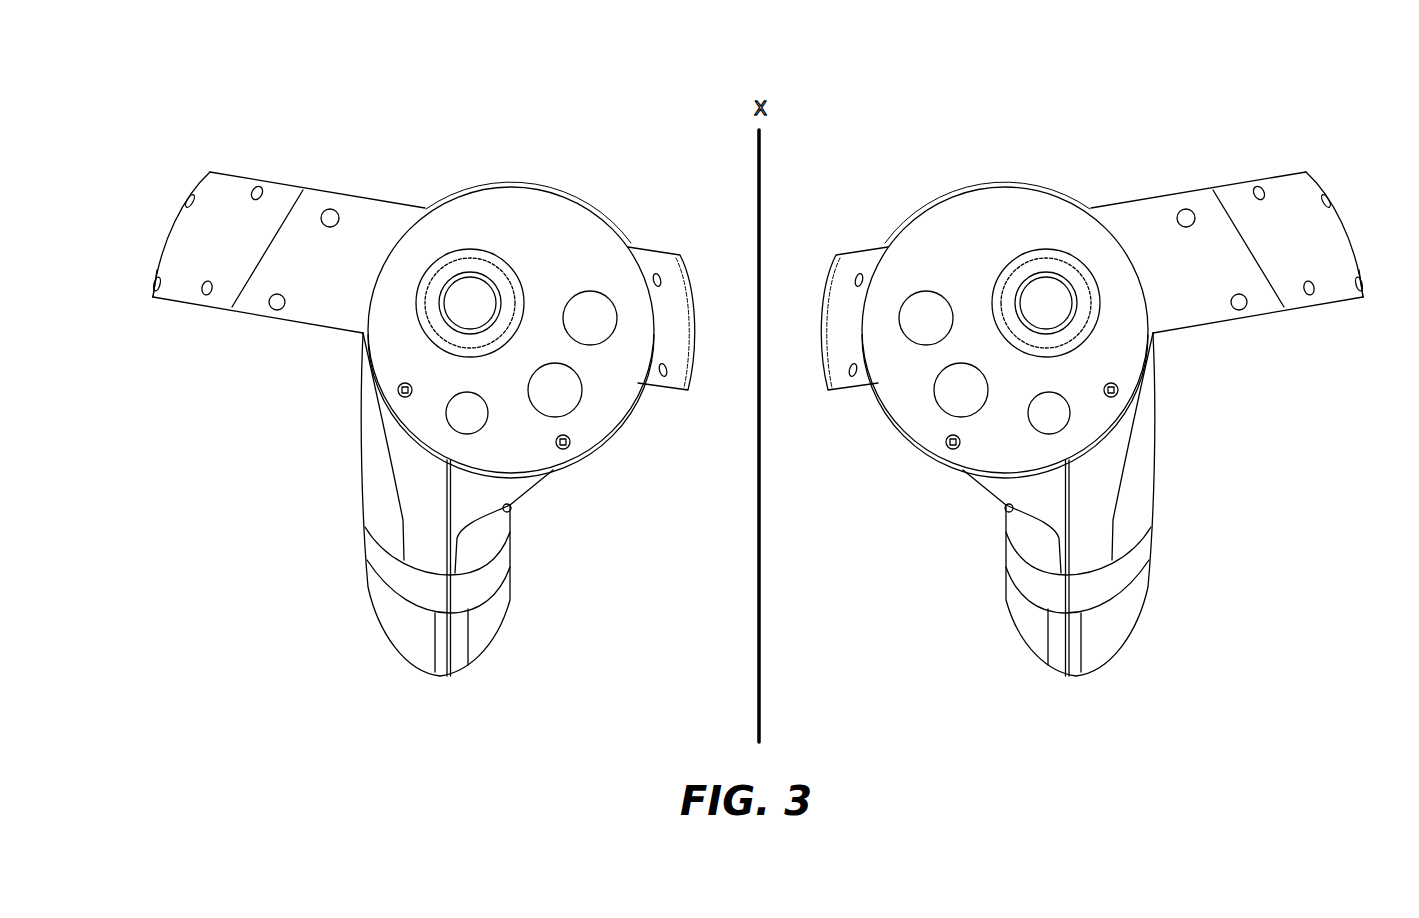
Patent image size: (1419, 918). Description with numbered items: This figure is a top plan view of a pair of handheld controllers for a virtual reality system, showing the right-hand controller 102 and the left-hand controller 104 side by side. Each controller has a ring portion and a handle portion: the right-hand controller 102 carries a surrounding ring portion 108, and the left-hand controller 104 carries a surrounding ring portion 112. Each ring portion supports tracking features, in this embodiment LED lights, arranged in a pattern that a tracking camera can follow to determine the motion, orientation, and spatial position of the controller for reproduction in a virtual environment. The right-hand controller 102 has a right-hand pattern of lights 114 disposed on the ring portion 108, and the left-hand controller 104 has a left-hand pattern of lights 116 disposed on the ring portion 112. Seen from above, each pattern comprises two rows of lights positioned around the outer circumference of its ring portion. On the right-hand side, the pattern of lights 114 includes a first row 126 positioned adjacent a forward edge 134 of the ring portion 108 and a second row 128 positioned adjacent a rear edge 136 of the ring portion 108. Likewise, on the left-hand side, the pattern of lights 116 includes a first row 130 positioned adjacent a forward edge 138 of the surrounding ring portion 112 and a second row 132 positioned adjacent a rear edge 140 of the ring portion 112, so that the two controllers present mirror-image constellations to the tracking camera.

The right-hand controller 102 is at (995, 152).
The left-hand controller 104 is at (490, 152).
The surrounding ring portion 108 is at (833, 373).
The surrounding ring portion 112 is at (673, 377).
The right-hand pattern of lights 114 is at (1215, 283).
The left-hand pattern of lights 116 is at (300, 300).
The first row 126 is at (1329, 182).
The second row 128 is at (1369, 281).
The first row 130 is at (180, 182).
The second row 132 is at (147, 285).
The forward edge 134 is at (1225, 185).
The rear edge 136 is at (1293, 308).
The forward edge 138 is at (363, 178).
The rear edge 140 is at (227, 308).